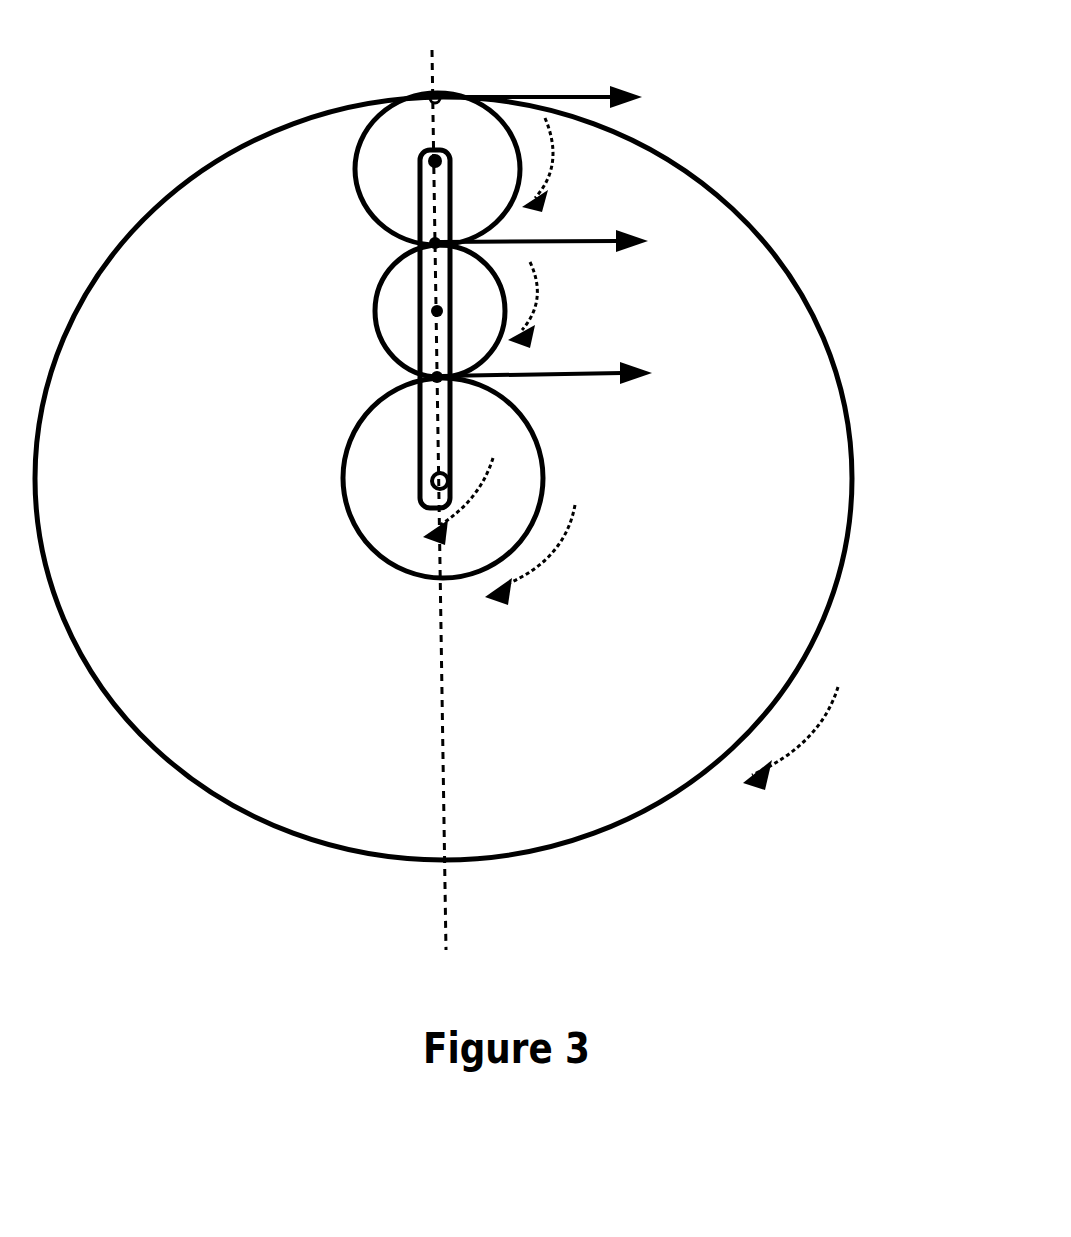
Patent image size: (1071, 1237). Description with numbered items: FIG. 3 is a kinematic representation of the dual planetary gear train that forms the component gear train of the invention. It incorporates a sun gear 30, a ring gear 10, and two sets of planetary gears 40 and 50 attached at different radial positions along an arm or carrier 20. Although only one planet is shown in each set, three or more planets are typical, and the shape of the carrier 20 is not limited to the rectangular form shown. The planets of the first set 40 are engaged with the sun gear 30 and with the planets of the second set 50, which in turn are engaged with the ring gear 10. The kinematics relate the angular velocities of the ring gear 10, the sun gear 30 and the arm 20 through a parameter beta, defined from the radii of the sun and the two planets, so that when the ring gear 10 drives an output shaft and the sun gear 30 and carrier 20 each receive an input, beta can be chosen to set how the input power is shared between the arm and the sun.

The ring gear 10 is at (845, 543).
The arm or carrier 20 is at (455, 442).
The sun gear 30 is at (393, 555).
The first set of planetary gears 40 is at (365, 295).
The second set of planetary gears 50 is at (353, 160).